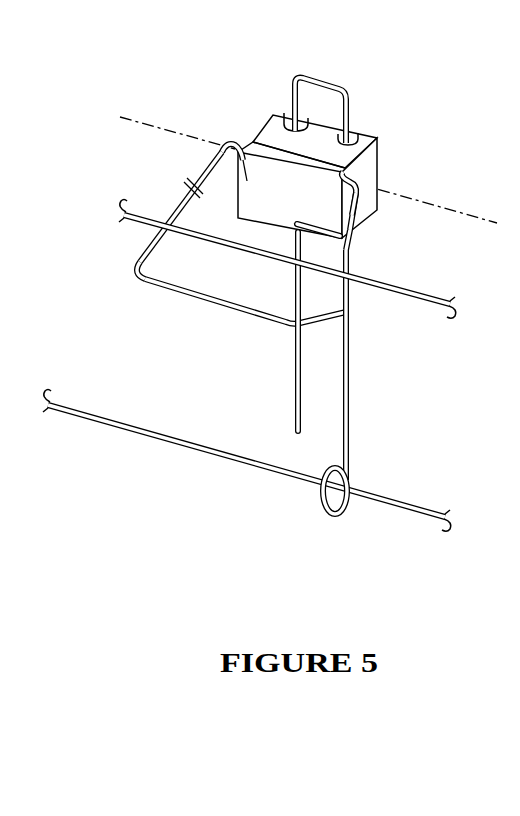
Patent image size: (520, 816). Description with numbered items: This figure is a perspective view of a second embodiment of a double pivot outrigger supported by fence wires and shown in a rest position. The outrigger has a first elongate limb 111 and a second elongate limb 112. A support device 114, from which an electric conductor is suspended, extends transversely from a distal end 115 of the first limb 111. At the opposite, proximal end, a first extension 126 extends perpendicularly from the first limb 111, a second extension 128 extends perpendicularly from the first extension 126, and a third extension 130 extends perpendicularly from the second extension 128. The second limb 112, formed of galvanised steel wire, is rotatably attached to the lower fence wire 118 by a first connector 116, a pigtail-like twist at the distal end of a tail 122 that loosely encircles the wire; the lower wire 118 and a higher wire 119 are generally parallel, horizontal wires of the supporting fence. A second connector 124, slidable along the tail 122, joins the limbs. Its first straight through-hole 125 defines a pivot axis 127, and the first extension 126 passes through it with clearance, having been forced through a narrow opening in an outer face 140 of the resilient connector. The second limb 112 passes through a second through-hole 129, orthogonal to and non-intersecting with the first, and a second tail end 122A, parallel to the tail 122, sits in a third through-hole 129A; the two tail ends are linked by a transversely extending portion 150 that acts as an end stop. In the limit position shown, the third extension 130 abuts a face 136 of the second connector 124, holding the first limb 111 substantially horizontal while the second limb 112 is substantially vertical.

The first elongate limb 111 is at (174, 216).
The second elongate limb 112 is at (352, 335).
The support device 114 is at (187, 297).
The distal end 115 is at (136, 275).
The first connector 116 is at (327, 504).
The lower fence wire 118 is at (398, 505).
The higher wire 119 is at (430, 300).
The tail 122 is at (350, 423).
The second tail end 122A is at (295, 385).
The second connector 124 is at (378, 139).
The first straight through-hole 125 is at (352, 173).
The first extension 126 is at (236, 145).
The pivot axis 127 is at (121, 116).
The second extension 128 is at (362, 195).
The second straight through-hole 129 is at (360, 134).
The third through-hole 129A is at (290, 114).
The third extension 130 is at (313, 228).
The face 136 is at (252, 182).
The outer face 140 is at (277, 136).
The transversely extending portion 150 is at (326, 86).